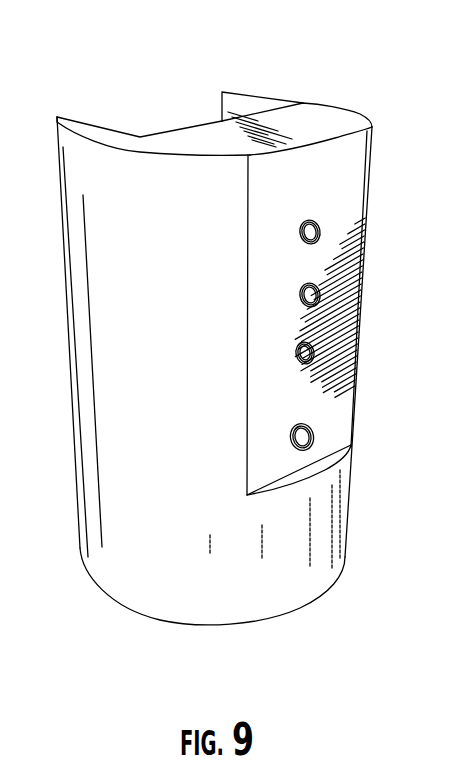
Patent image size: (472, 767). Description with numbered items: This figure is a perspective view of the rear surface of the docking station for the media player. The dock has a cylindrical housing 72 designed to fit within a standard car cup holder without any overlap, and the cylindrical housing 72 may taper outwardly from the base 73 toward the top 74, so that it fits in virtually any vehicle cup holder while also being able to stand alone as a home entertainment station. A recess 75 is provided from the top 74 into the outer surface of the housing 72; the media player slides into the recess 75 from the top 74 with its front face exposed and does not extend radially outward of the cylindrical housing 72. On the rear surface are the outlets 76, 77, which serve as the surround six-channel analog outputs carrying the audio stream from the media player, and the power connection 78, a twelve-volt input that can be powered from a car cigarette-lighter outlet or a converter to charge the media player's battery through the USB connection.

The cylindrical housing 72 is at (90, 408).
The base 73 is at (209, 609).
The top 74 is at (326, 113).
The recess 75 is at (158, 119).
The outlet 76 is at (332, 231).
The outlet 77 is at (337, 296).
The power connection 78 is at (315, 438).